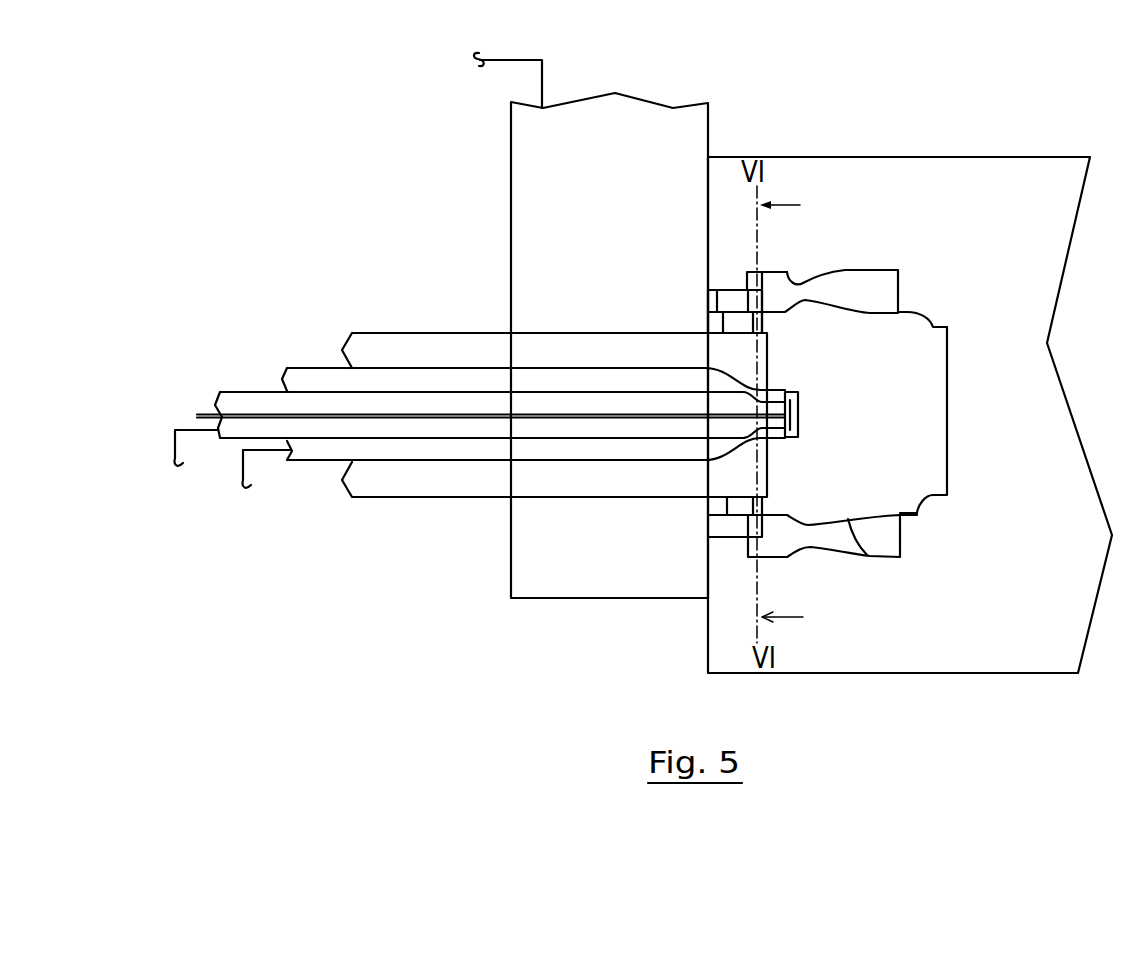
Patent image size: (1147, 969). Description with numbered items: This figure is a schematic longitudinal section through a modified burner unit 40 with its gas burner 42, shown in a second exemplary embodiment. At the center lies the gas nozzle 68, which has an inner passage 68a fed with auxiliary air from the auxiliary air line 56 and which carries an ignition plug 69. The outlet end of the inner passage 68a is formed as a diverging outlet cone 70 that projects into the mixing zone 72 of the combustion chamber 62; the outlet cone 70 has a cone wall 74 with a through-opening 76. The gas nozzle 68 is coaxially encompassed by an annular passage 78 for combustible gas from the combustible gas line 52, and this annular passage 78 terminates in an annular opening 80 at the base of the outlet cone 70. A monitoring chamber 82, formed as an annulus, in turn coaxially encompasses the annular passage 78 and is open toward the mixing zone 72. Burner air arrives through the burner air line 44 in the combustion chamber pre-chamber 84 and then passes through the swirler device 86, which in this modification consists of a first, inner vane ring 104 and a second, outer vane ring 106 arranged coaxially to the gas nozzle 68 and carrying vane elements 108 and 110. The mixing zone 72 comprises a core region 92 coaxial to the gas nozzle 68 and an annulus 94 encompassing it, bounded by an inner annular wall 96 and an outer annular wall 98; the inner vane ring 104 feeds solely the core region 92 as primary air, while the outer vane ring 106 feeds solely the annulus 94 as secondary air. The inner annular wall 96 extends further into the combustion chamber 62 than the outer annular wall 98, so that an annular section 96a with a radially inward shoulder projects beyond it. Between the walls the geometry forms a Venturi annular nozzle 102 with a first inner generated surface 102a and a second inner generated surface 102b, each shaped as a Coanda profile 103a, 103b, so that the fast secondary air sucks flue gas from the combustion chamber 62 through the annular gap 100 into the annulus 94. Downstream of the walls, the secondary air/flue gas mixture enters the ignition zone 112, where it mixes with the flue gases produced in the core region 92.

The burner unit 40 is at (780, 105).
The gas burner 42 is at (692, 572).
The burner air line 44 is at (545, 83).
The combustible gas line 52 is at (238, 465).
The auxiliary air line 56 is at (173, 454).
The combustion chamber 62 is at (1042, 412).
The gas nozzle 68 is at (283, 357).
The inner passage 68a is at (242, 403).
The ignition plug 69 is at (312, 417).
The outlet cone 70 is at (793, 417).
The mixing zone 72 is at (852, 226).
The cone wall 74 is at (788, 398).
The through-opening 76 is at (780, 430).
The annular passage 78 is at (310, 382).
The annular opening 80 is at (785, 387).
The monitoring chamber 82 is at (413, 352).
The combustion chamber pre-chamber 84 is at (552, 153).
The swirler device 86 is at (703, 523).
The core region 92 is at (918, 425).
The annulus 94 is at (890, 535).
The inner annular wall 96 is at (910, 310).
The annular section 96a is at (933, 326).
The outer annular wall 98 is at (827, 278).
The annular gap 100 is at (745, 273).
The Venturi annular nozzle 102 is at (831, 545).
The first inner generated surface 102a is at (868, 557).
The second inner generated surface 102b is at (783, 276).
The Coanda profile 103a is at (808, 538).
The Coanda profile 103b is at (868, 270).
The first, inner vane ring 104 is at (706, 314).
The second, outer vane ring 106 is at (705, 284).
The vane elements 108 is at (724, 328).
The vane elements 110 is at (713, 297).
The ignition zone 112 is at (994, 386).